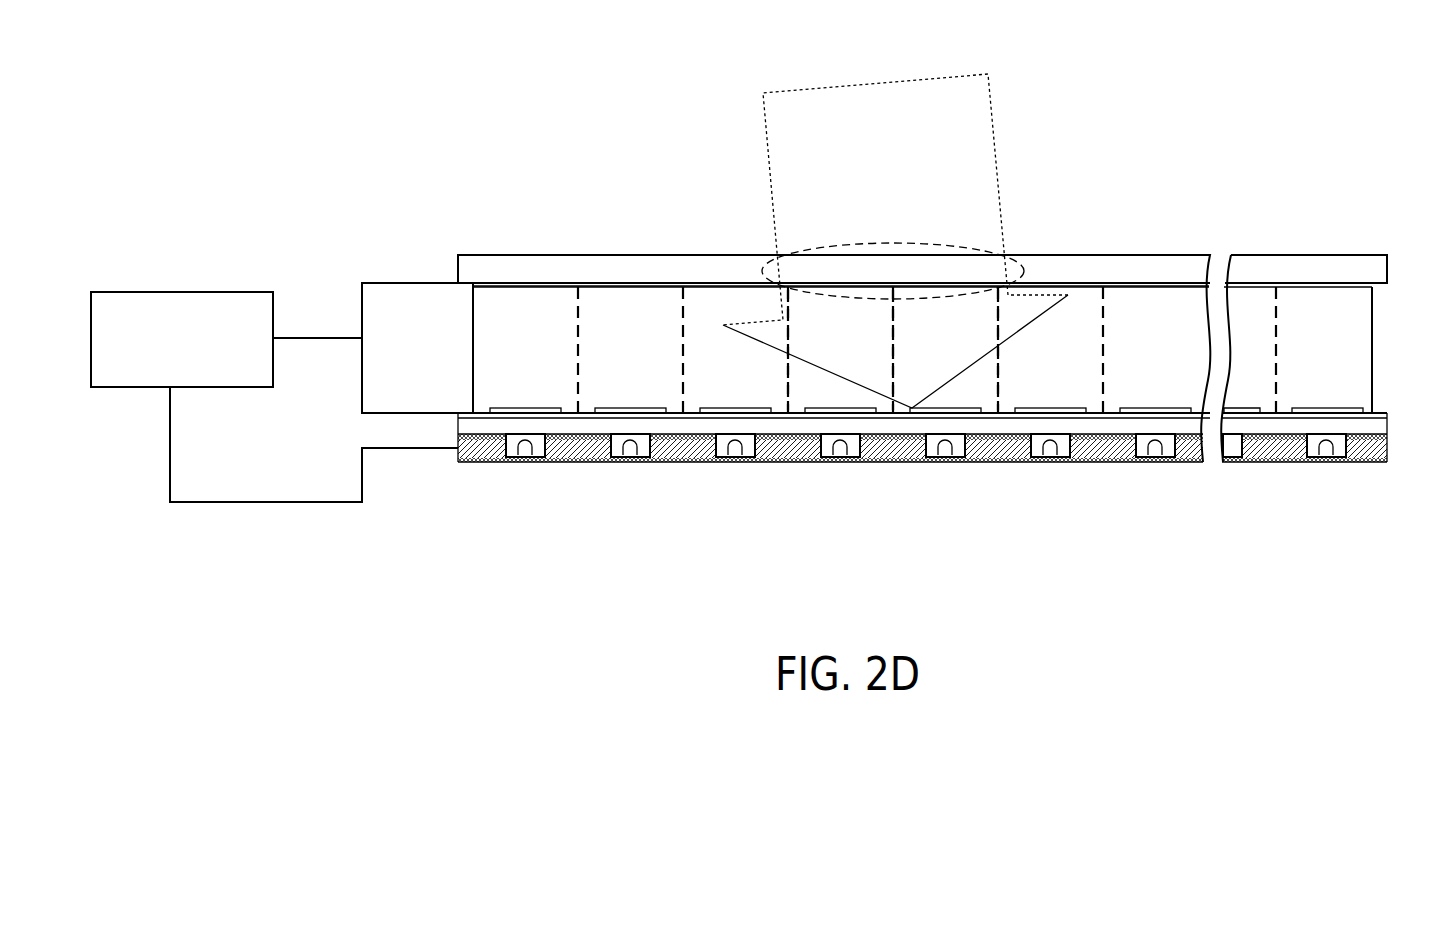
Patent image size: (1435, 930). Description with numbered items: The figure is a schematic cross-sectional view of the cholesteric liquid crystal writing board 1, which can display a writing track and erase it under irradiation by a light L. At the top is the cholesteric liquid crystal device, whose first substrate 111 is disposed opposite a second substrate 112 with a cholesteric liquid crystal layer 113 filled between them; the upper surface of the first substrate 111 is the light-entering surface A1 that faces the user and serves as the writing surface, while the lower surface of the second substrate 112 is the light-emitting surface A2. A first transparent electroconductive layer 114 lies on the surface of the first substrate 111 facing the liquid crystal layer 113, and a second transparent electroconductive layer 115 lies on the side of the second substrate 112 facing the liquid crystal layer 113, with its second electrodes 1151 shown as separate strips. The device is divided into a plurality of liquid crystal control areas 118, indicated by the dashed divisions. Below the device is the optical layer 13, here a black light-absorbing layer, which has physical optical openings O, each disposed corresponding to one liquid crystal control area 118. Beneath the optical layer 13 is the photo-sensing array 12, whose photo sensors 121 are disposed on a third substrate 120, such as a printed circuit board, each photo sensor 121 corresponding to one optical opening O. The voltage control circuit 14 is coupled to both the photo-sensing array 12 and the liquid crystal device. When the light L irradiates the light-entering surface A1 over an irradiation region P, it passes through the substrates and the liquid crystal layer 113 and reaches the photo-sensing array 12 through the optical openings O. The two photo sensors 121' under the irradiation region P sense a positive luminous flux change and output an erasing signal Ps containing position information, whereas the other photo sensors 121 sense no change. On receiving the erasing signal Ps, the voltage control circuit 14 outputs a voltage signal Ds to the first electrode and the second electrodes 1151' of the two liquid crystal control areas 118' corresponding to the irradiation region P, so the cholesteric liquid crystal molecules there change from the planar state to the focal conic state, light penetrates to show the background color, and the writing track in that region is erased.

The cholesteric liquid crystal writing board 1 is at (350, 90).
The first substrate 111 is at (490, 268).
The cholesteric liquid crystal layer 113 is at (493, 325).
The first transparent electroconductive layer 114 is at (1170, 283).
The second transparent electroconductive layer 115 is at (503, 405).
The second electrode 1151 is at (926, 375).
The second electrode of irradiated liquid crystal control area 1151' is at (893, 468).
The liquid crystal control area 118 is at (992, 301).
The liquid crystal control area corresponding to irradiation region 118' is at (901, 414).
The photo-sensing array 12 is at (458, 459).
The third substrate 120 is at (1268, 457).
The second substrate 112 is at (568, 460).
The photo sensor 121 is at (926, 498).
The photo sensor under irradiation region 121' is at (892, 501).
The optical layer 13 is at (460, 437).
The voltage control circuit 14 is at (228, 292).
The voltage signal Ds is at (347, 333).
The erasing signal Ps is at (338, 494).
The light L is at (983, 106).
The irradiation region P is at (967, 247).
The optical opening O is at (540, 409).
The light-entering surface A1 is at (1310, 255).
The light-emitting surface A2 is at (1118, 433).